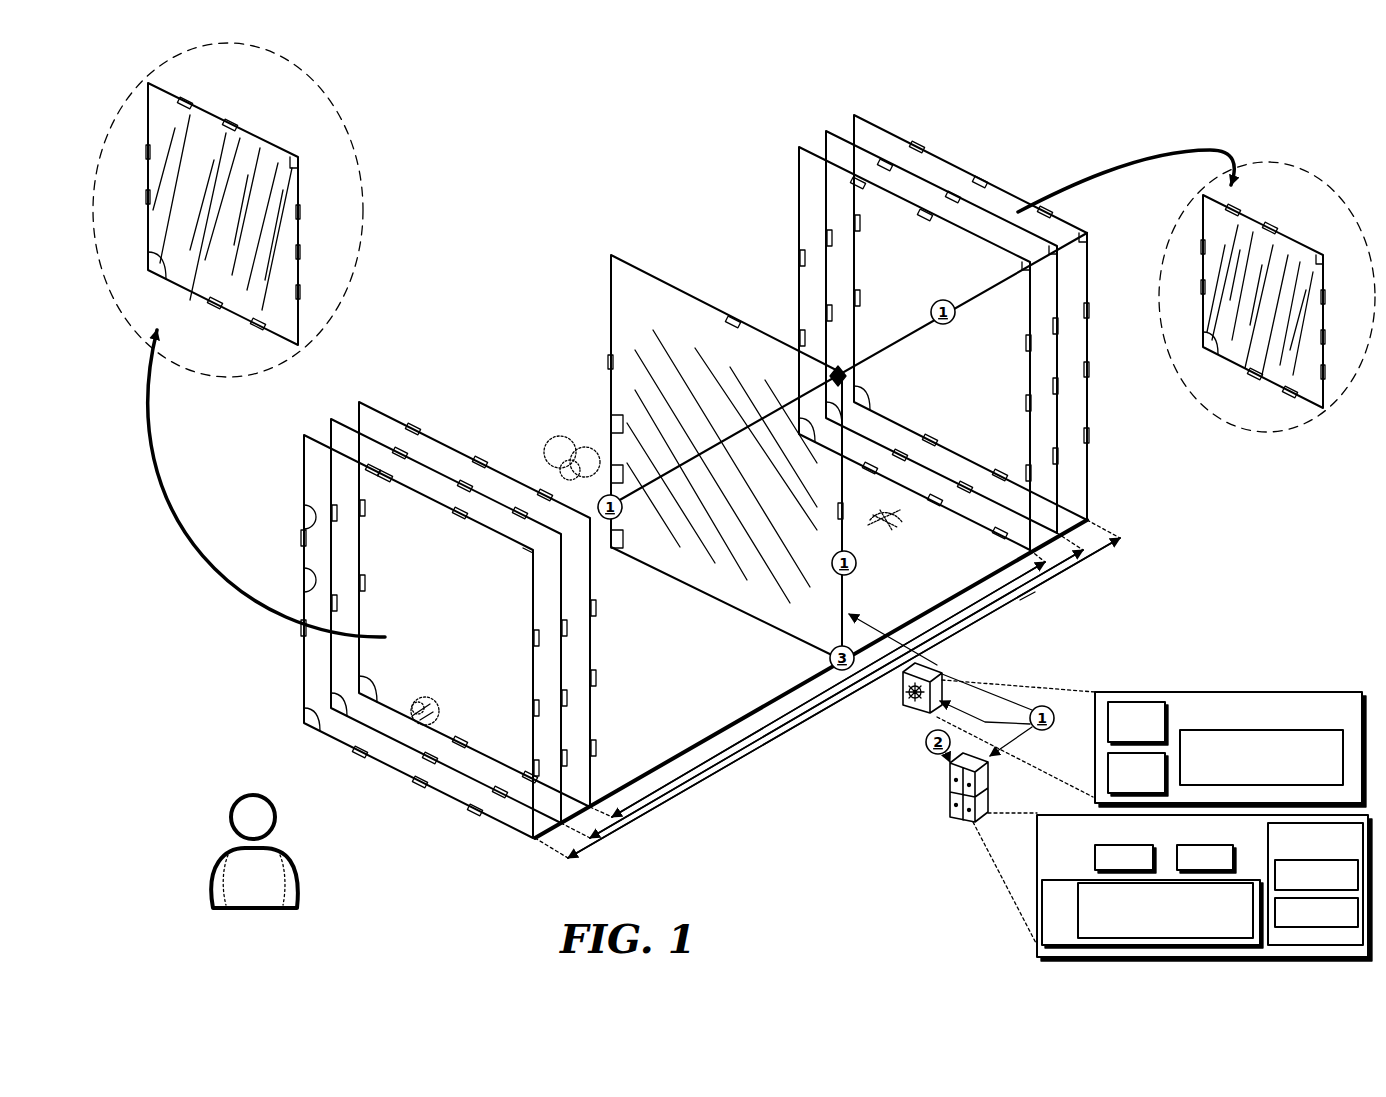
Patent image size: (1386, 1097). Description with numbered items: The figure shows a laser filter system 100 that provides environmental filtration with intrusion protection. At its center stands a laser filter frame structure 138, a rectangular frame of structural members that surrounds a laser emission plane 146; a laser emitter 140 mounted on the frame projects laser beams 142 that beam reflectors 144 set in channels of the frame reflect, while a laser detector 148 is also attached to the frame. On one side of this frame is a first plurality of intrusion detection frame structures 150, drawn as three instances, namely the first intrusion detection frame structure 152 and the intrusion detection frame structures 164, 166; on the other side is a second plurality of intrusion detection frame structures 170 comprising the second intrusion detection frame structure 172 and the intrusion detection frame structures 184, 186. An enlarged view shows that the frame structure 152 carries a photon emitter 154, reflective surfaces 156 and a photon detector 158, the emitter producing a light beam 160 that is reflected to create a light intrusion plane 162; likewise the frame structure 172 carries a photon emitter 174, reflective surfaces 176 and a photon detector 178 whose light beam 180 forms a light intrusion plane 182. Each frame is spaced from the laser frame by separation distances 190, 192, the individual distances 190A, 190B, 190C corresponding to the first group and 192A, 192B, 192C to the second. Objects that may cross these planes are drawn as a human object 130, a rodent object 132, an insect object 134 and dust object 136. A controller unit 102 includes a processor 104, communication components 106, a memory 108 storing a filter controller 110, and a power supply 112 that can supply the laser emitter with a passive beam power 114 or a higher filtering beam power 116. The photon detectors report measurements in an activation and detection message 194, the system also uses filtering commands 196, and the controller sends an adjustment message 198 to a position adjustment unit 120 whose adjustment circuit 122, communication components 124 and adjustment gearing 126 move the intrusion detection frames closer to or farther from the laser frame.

The laser filter system 100 is at (1124, 106).
The controller unit 102 is at (953, 803).
The processor 104 is at (1125, 859).
The communication components 106 is at (1206, 859).
The memory 108 is at (1152, 914).
The filter controller 110 is at (1165, 910).
The power supply 112 is at (1315, 884).
The passive beam power 114 is at (1316, 875).
The filtering beam power 116 is at (1316, 912).
The position adjustment unit 120 is at (907, 707).
The adjustment circuit 122 is at (1138, 723).
The communication components 124 is at (1138, 774).
The adjustment gearing 126 is at (1261, 757).
The object 130 is at (241, 818).
The object 132 is at (440, 700).
The object 134 is at (900, 525).
The object 136 is at (572, 445).
The laser filter frame structure 138 is at (818, 434).
The laser emitter 140 is at (611, 435).
The laser beam 142 is at (655, 340).
The beam reflector 144 is at (609, 362).
The laser emission plane 146 is at (664, 301).
The laser detector 148 is at (845, 368).
The first plurality of intrusion detection frame structures 150 is at (344, 454).
The first intrusion detection frame structure 152 is at (345, 782).
The photon emitter 154 is at (305, 512).
The reflective surface 156 is at (485, 845).
The photon detector 158 is at (528, 550).
The light beam 160 is at (158, 258).
The light intrusion plane 162 is at (277, 244).
The intrusion detection frame structure 164 is at (338, 433).
The intrusion detection frame structure 166 is at (385, 426).
The second plurality of intrusion detection frame structures 170 is at (1056, 318).
The second intrusion detection frame structure 172 is at (885, 130).
The photon emitter 174 is at (860, 399).
The reflective surface 176 is at (1088, 310).
The photon detector 178 is at (1082, 242).
The light beam 180 is at (1207, 338).
The light intrusion plane 182 is at (1307, 324).
The intrusion detection frame structure 184 is at (836, 153).
The intrusion detection frame structure 186 is at (819, 228).
The separation distances 190 is at (745, 790).
The separation distance 190A is at (628, 850).
The separation distance 190B is at (650, 830).
The separation distance 190C is at (672, 812).
The separation distances 192 is at (1020, 603).
The separation distance 192A is at (1124, 544).
The separation distance 192B is at (1087, 556).
The separation distance 192C is at (1047, 568).
The activation and detection message 194 is at (965, 679).
The filtering commands 196 is at (1044, 706).
The adjustment message 198 is at (935, 757).